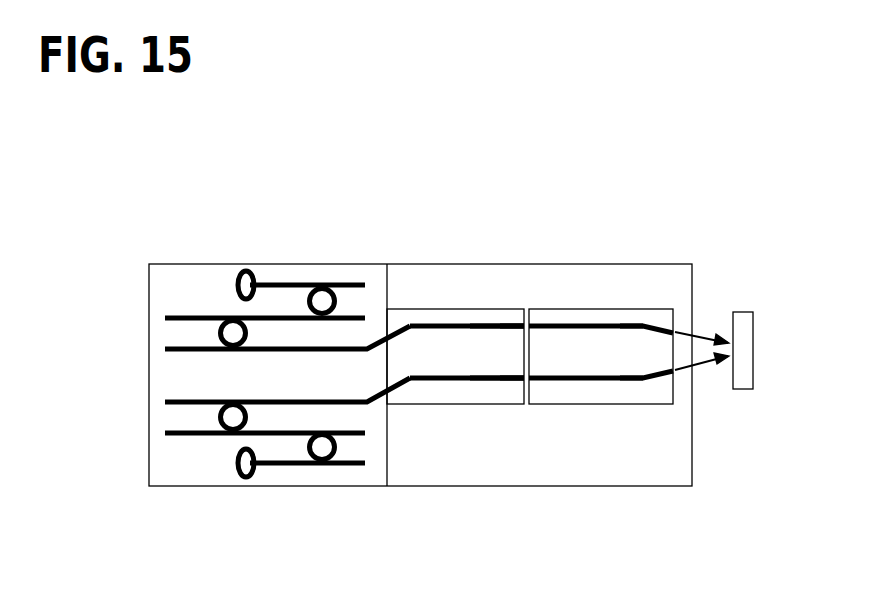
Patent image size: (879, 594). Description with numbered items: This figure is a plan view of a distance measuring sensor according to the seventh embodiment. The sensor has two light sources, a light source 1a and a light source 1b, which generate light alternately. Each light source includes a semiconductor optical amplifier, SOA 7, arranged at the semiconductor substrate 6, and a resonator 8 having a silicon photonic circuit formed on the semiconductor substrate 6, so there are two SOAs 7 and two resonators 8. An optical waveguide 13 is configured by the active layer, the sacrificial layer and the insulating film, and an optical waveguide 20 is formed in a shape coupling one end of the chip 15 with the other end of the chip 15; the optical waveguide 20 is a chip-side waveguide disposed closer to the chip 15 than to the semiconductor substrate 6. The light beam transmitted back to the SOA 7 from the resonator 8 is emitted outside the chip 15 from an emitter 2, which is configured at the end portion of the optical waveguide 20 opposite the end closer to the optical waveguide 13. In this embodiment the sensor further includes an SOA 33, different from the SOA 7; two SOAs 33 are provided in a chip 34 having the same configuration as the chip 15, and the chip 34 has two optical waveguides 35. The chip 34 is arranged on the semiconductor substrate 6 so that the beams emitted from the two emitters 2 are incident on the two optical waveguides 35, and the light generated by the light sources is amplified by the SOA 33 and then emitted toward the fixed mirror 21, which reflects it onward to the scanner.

The light source 1a is at (363, 273).
The light source 1b is at (356, 478).
The emitter 2 is at (515, 322).
The semiconductor substrate 6 is at (186, 262).
The semiconductor optical amplifier (SOA) 7 is at (462, 322).
The resonator 8 is at (290, 282).
The optical waveguide 13 is at (205, 313).
The chip 15 is at (431, 306).
The optical waveguide 20 is at (490, 322).
The fixed mirror 21 is at (745, 330).
The SOA 33 is at (592, 322).
The chip 34 is at (567, 306).
The optical waveguide 35 is at (622, 322).